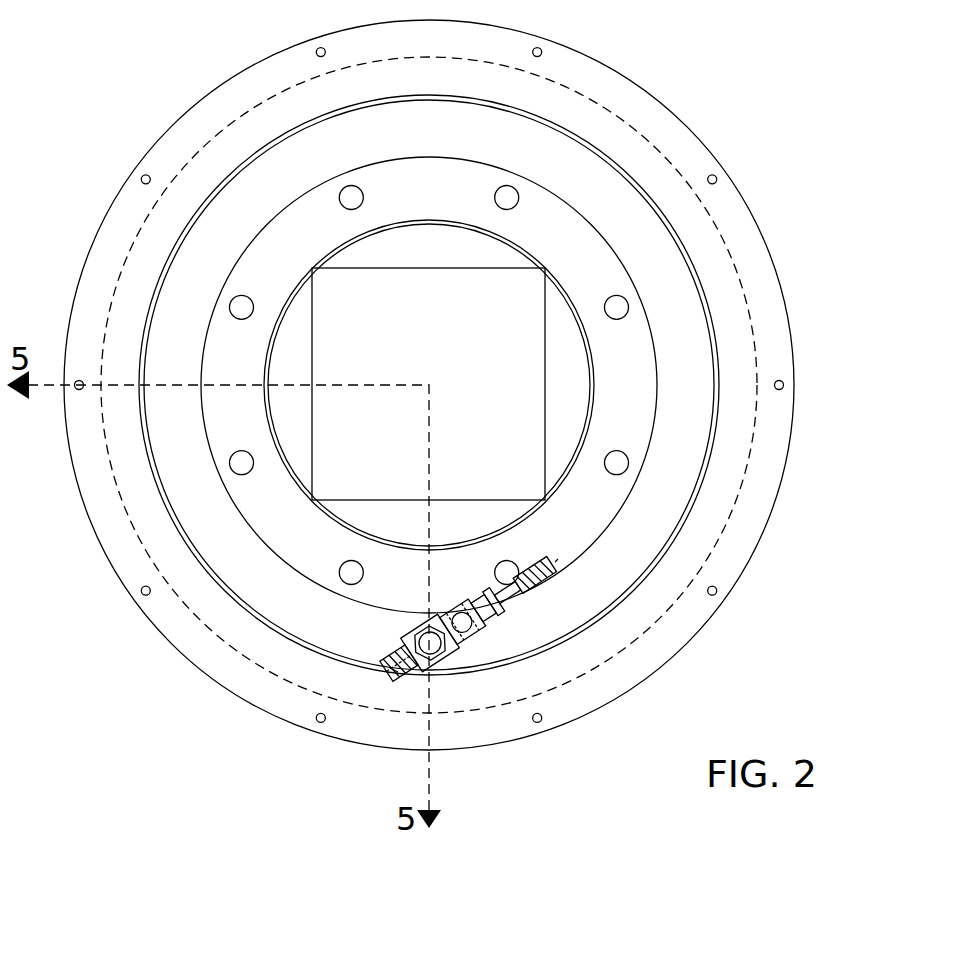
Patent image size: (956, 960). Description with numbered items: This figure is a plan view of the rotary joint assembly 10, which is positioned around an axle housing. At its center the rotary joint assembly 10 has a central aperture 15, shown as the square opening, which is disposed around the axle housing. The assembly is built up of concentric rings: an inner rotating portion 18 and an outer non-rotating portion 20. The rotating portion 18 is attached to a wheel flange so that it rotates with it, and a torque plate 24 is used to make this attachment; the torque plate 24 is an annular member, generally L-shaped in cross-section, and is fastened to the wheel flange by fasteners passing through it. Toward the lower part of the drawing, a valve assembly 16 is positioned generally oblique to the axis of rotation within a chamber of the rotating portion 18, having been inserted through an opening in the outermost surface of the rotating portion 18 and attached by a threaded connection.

The rotary joint assembly 10 is at (108, 62).
The central aperture 15 is at (441, 351).
The valve assembly 16 is at (468, 678).
The rotating portion 18 is at (657, 492).
The non-rotating portion 20 is at (152, 612).
The torque plate 24 is at (607, 375).